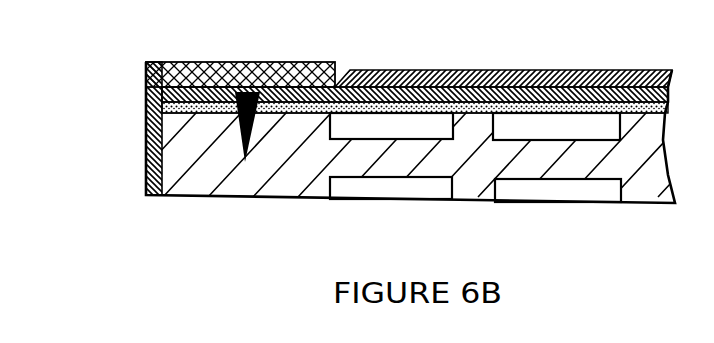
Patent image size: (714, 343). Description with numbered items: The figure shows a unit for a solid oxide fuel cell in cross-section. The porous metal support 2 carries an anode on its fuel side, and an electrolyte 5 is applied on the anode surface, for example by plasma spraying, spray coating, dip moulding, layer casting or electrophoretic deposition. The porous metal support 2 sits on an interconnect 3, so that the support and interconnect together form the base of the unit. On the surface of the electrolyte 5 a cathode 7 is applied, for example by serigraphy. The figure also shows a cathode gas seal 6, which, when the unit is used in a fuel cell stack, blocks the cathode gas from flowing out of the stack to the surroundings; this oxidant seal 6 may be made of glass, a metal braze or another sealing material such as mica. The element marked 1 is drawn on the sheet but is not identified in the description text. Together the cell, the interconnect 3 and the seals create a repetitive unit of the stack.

The sensor device 1 is at (293, 65).
The porous metal support 2 is at (150, 106).
The interconnect 3 is at (179, 157).
The electrolyte 5 is at (543, 72).
The cathode gas seal 6 is at (212, 72).
The cathode 7 is at (443, 72).